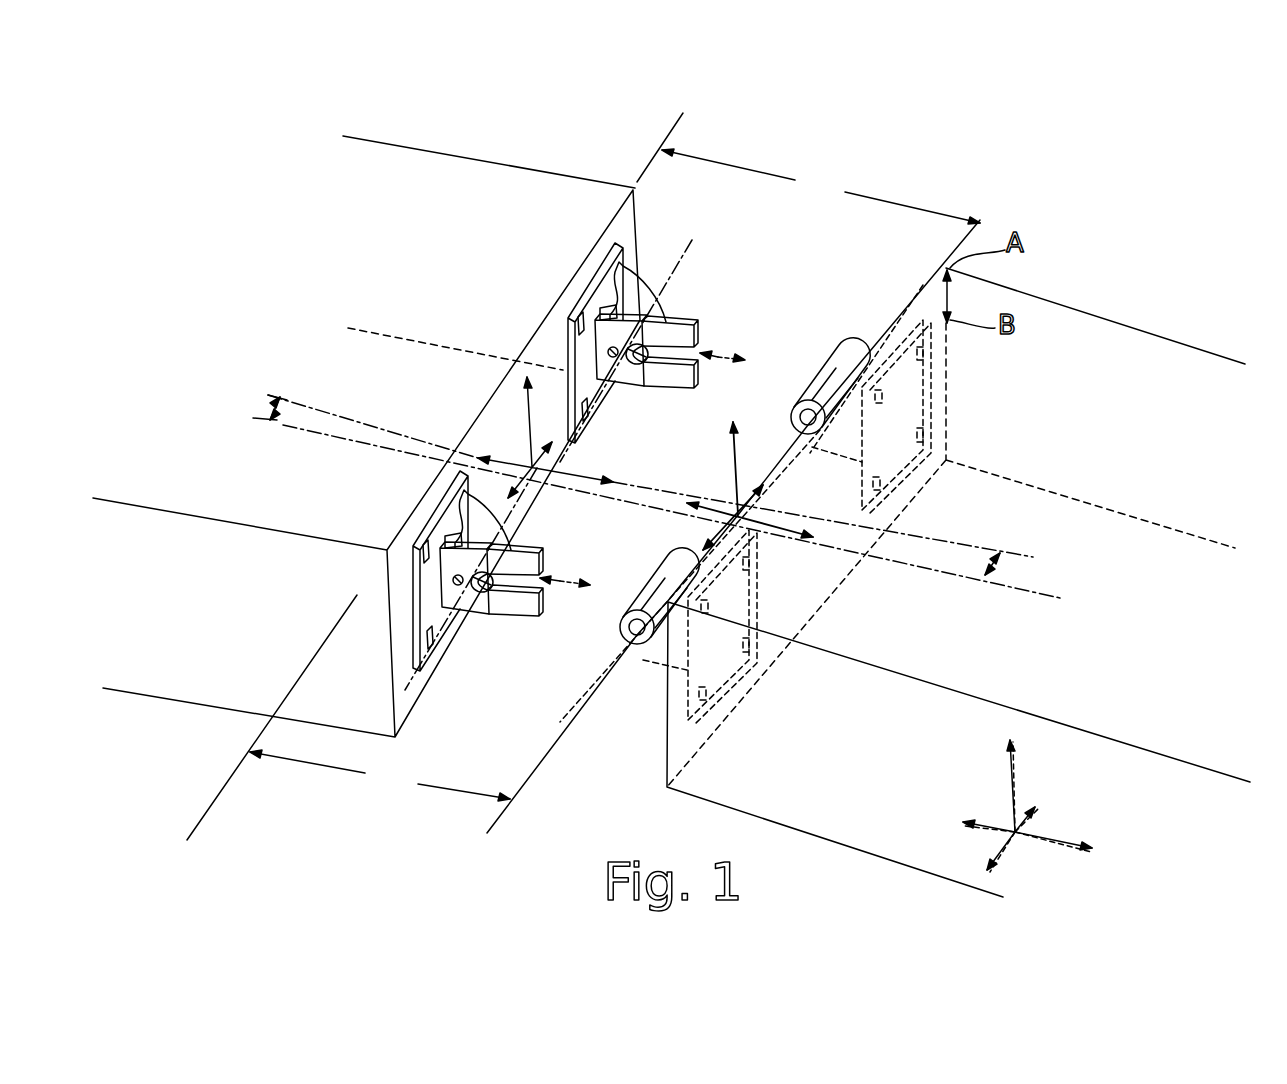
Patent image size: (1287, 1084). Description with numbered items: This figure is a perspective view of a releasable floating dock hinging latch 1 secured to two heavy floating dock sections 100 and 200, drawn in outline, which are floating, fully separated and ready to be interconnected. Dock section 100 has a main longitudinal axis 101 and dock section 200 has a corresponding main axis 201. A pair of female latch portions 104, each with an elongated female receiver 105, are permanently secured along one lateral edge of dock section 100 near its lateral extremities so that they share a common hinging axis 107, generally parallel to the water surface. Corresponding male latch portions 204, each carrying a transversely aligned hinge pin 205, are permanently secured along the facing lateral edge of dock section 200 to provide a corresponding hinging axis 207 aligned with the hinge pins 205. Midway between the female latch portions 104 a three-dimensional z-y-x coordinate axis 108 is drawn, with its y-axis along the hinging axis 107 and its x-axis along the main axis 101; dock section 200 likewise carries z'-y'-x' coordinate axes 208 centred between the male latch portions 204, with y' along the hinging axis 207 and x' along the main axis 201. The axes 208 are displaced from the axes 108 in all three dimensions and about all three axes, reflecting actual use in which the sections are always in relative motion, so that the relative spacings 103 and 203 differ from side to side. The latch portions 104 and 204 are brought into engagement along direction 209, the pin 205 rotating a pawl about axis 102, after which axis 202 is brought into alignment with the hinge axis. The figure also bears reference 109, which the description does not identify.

The releasable dock latch 1 is at (632, 182).
The dock section 100 is at (478, 193).
The main axis 101 is at (255, 418).
The axis 102 is at (1000, 568).
The relative spacing 103 is at (821, 186).
The female latch portion 104 is at (620, 242).
The elongated female receiver 105 is at (690, 316).
The hinging axis 107 is at (693, 275).
The z-y-x coordinate axis 108 is at (531, 463).
The displacement direction 109 is at (740, 352).
The dock section 200 is at (1108, 343).
The main axis 201 is at (280, 393).
The axis 202 is at (275, 415).
The relative spacing 203 is at (348, 717).
The male latch portion 204 is at (847, 347).
The hinge pin 205 is at (827, 386).
The hinging axis 207 is at (920, 297).
The z'-y'-x' coordinate axes 208 is at (765, 511).
The direction 209 is at (560, 583).